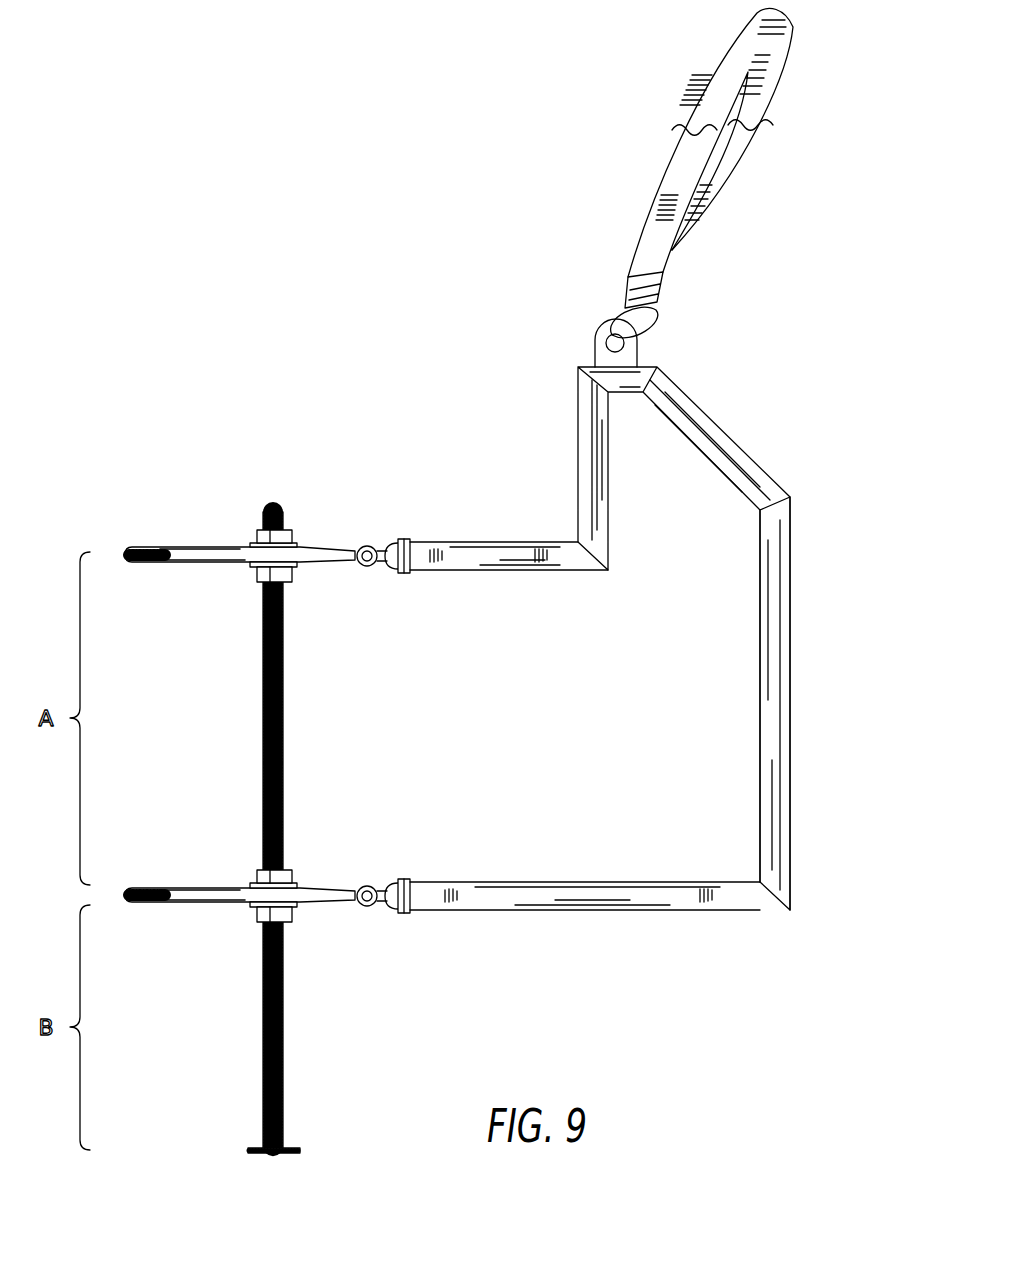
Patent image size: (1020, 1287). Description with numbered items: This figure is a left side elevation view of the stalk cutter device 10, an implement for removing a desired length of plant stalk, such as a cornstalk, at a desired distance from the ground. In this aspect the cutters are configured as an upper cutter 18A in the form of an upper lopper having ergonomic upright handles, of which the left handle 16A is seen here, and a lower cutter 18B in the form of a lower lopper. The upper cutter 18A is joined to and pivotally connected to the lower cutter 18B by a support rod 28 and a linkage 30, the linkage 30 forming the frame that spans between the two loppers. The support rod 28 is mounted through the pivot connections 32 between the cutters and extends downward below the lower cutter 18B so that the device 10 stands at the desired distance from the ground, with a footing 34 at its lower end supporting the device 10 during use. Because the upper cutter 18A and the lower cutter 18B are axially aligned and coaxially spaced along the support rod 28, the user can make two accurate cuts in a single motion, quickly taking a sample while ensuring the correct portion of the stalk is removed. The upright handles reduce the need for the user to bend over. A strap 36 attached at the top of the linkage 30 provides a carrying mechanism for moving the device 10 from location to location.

The stalk cutter device 10 is at (165, 387).
The left handle 16A is at (697, 400).
The upper cutter 18A is at (367, 515).
The lower cutter 18B is at (368, 937).
The support rod 28 is at (273, 512).
The linkage 30 is at (768, 655).
The pivot connections 32 is at (287, 573).
The footing 34 is at (257, 1148).
The strap 36 is at (683, 160).